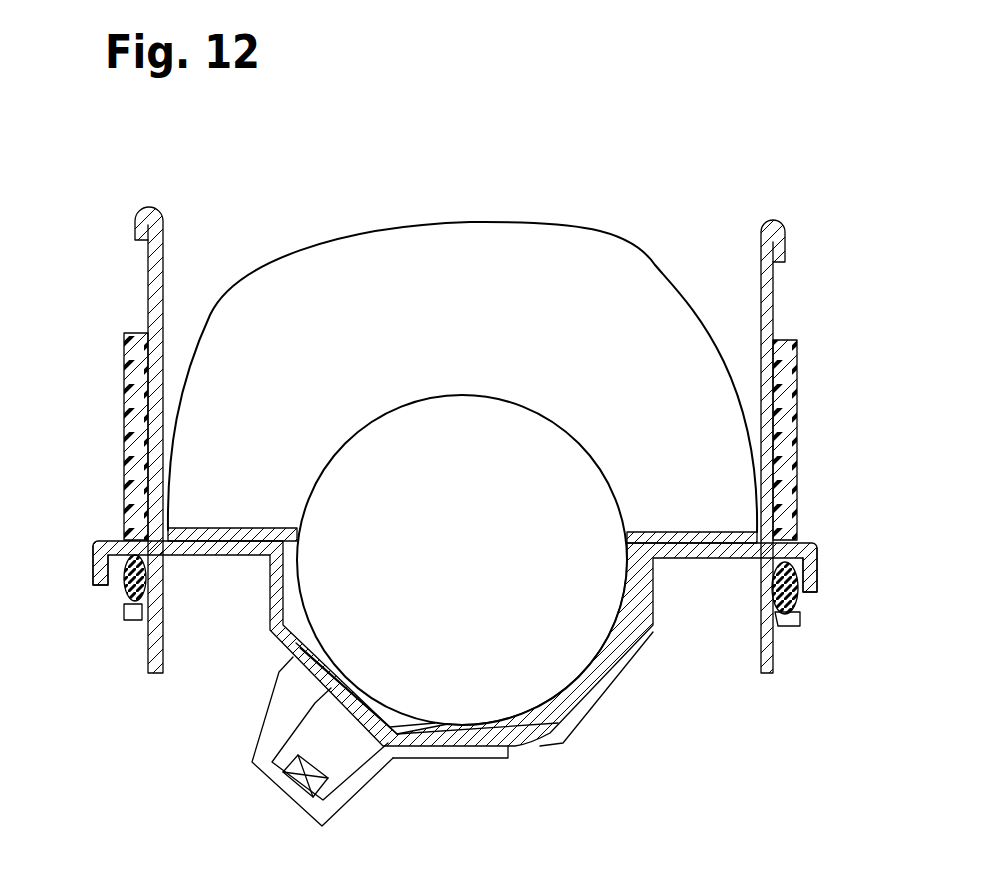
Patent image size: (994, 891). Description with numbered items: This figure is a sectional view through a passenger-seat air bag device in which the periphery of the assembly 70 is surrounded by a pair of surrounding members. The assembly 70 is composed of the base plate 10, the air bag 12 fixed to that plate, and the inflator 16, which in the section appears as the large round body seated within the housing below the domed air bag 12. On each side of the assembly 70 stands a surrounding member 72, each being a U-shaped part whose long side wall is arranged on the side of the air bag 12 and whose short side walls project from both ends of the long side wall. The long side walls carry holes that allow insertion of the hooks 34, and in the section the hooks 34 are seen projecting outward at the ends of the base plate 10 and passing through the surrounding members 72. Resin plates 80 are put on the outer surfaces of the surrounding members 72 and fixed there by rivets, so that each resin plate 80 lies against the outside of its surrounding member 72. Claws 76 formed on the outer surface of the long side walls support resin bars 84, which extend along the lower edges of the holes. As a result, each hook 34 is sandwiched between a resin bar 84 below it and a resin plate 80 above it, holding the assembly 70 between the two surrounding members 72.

The base plate 10 is at (210, 558).
The air bag 12 is at (414, 256).
The inflator 16 is at (562, 460).
The hooks 34 is at (92, 555).
The assembly 70 is at (643, 227).
The surrounding member 72 is at (148, 300).
The claws 76 is at (132, 620).
The resin plates 80 is at (123, 462).
The resin bars 84 is at (120, 593).